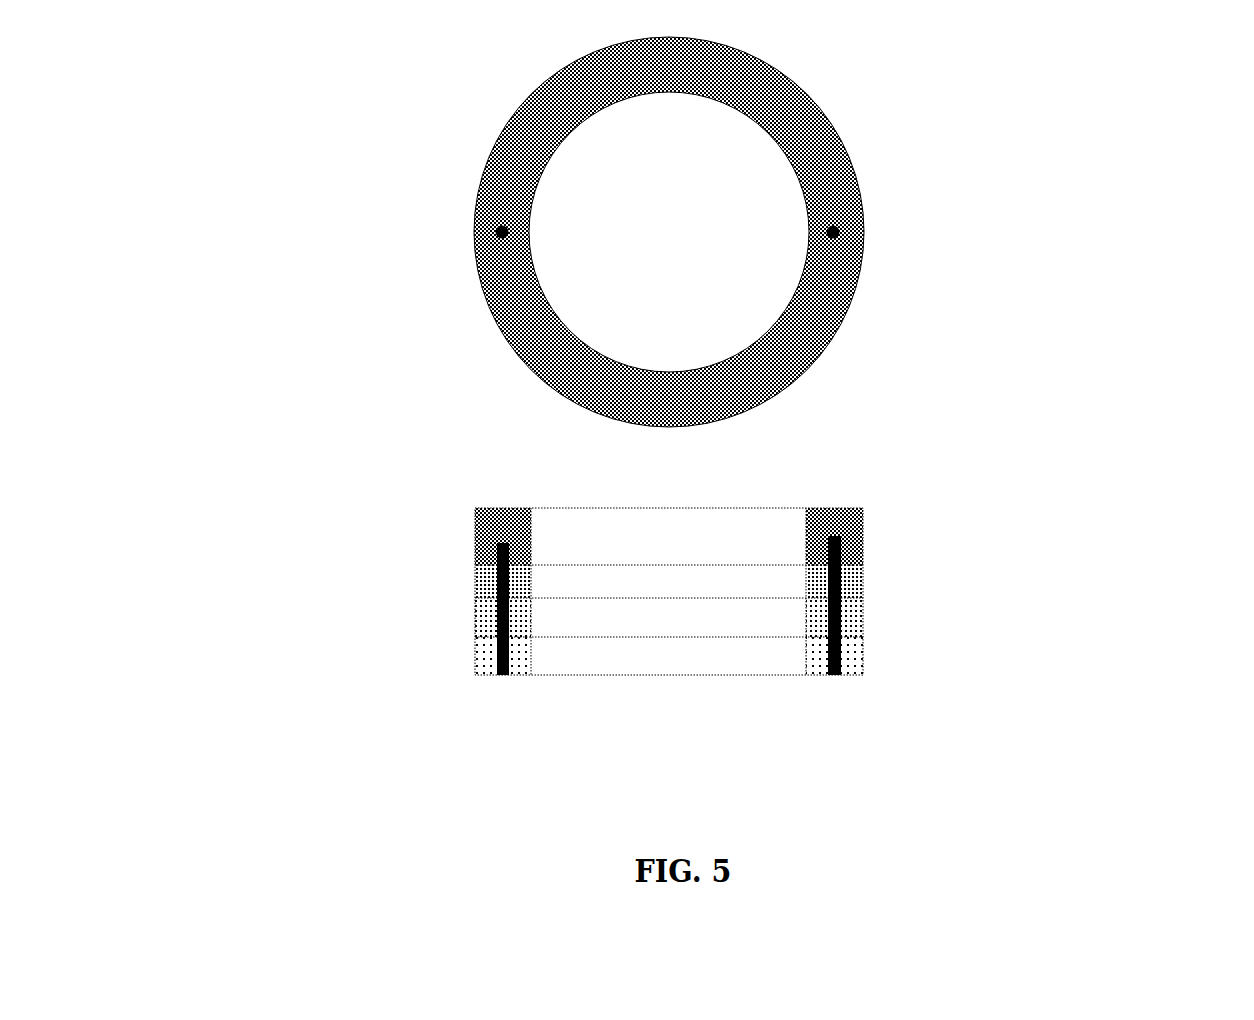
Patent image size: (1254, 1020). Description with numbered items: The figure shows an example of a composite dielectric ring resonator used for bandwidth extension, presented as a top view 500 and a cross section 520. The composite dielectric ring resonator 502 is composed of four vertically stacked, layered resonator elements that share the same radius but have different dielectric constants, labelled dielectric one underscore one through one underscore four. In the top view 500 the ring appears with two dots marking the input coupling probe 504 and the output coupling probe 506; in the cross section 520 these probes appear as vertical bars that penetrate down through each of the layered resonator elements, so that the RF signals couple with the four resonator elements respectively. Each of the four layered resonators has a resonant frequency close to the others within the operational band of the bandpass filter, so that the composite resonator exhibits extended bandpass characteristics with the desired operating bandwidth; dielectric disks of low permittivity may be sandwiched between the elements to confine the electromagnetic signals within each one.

The top view 500 is at (723, 232).
The composite dielectric ring resonator 502 is at (823, 297).
The input coupling probe 504 is at (496, 252).
The output coupling probe 506 is at (960, 786).
The cross section 520 is at (695, 570).